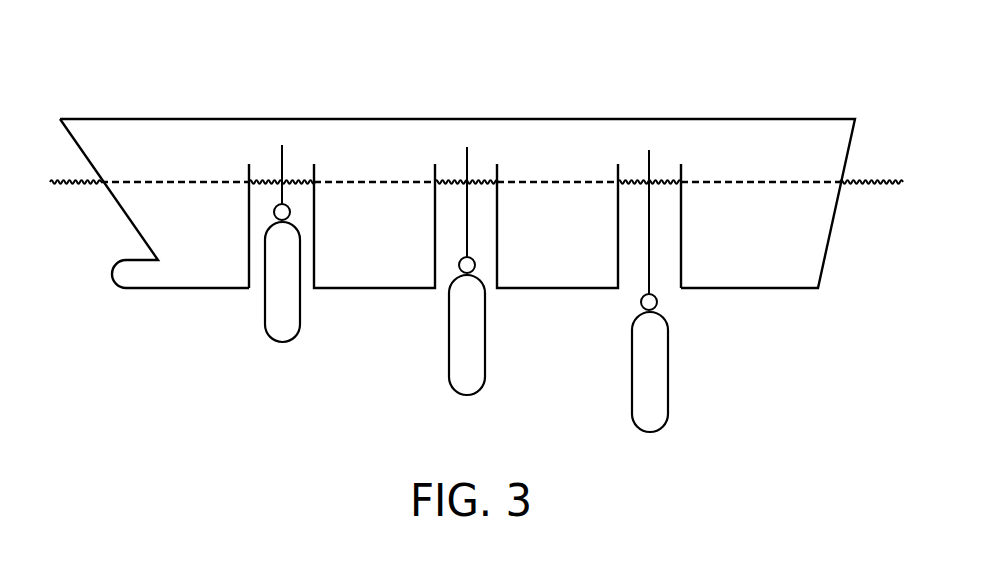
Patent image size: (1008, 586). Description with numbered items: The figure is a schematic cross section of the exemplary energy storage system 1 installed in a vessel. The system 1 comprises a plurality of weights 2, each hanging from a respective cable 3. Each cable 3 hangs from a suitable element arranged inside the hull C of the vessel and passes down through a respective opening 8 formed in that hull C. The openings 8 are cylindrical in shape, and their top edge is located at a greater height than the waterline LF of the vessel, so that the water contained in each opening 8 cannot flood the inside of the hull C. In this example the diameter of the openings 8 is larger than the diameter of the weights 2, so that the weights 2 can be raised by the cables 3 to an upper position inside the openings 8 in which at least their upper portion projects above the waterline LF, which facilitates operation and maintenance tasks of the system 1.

The energy storage system 1 is at (93, 32).
The weights 2 is at (292, 325).
The cables 3 is at (280, 157).
The openings 8 is at (311, 252).
The hull C is at (828, 247).
The waterline LF is at (459, 181).